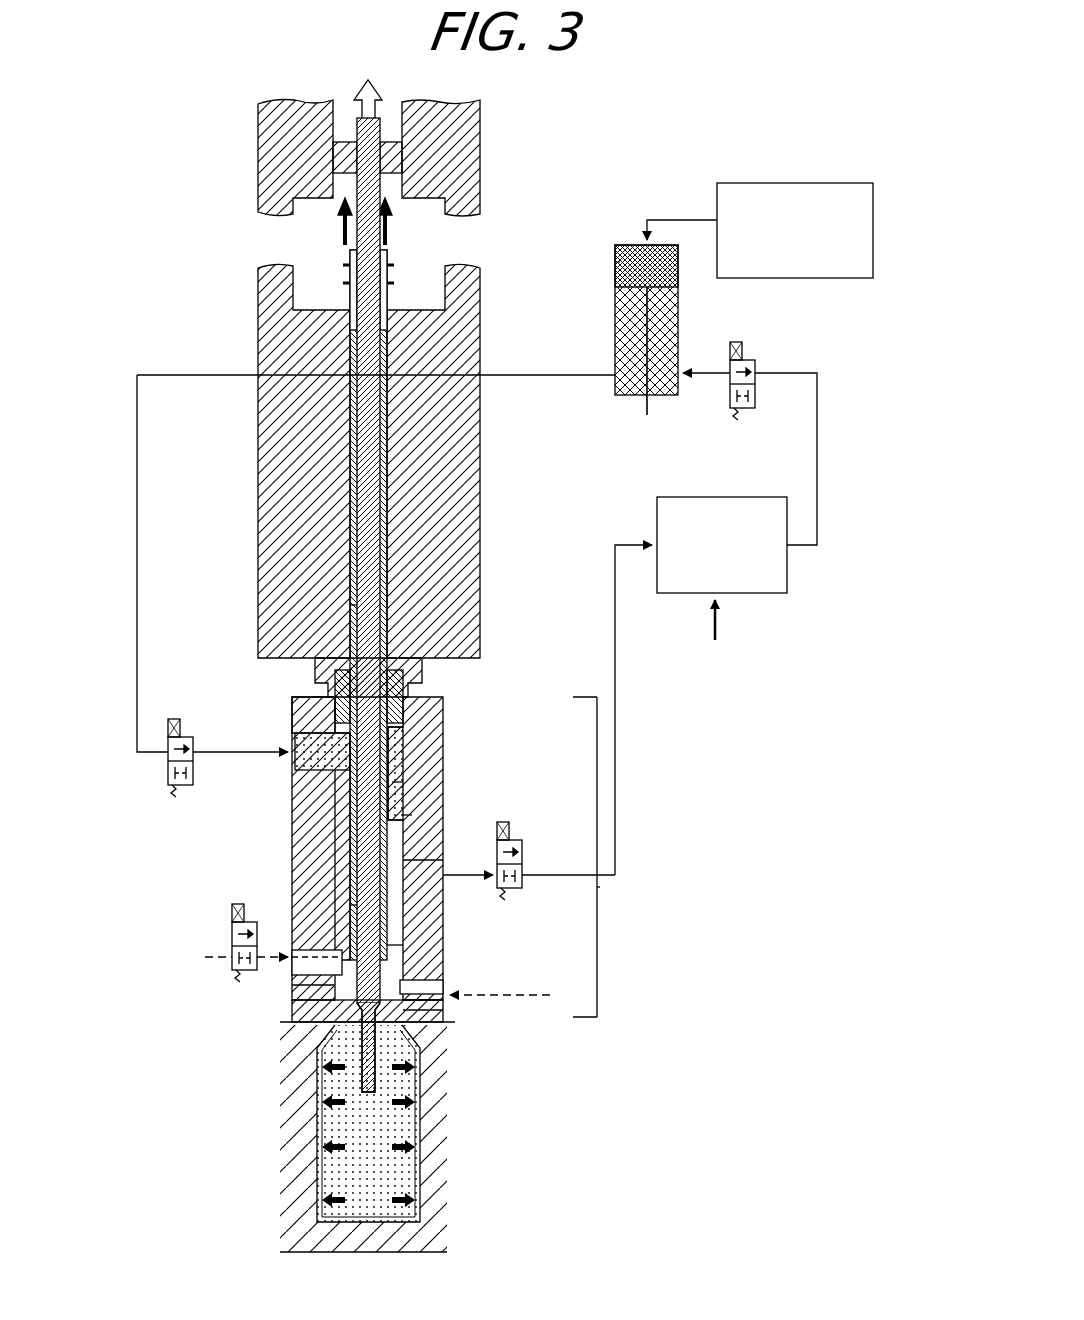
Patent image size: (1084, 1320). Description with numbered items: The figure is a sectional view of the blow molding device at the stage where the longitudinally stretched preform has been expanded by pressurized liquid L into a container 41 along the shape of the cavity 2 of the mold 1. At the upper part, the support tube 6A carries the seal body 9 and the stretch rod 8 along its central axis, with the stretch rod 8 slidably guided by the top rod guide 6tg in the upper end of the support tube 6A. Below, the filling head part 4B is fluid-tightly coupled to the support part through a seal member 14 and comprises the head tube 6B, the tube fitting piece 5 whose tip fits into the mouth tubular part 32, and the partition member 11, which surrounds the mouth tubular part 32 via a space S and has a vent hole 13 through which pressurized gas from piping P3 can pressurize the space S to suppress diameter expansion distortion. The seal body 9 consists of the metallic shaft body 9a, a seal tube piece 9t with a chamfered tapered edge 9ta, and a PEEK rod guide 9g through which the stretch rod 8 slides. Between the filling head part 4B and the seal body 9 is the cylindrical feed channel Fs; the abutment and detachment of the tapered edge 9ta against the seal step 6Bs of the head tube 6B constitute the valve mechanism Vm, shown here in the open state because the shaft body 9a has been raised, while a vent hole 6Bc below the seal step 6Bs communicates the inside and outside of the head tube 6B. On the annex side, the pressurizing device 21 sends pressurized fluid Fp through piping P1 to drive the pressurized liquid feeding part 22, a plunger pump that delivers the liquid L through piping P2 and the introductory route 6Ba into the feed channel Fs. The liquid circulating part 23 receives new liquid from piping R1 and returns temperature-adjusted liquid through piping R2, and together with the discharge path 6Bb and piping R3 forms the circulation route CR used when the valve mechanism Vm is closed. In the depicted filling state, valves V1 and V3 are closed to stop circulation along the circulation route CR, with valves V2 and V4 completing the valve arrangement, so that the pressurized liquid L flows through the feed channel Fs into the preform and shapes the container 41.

The top rod guide 6tg is at (395, 152).
The pressurizing device 21 is at (792, 172).
The piping P1 is at (650, 214).
The pressurized liquid feeding part 22 is at (614, 240).
The pressurized fluid Fp is at (612, 262).
The liquid L is at (395, 735).
The support tube 6A is at (282, 392).
The valve V1 is at (752, 400).
The piping R2 is at (820, 452).
The piping P2 is at (515, 378).
The liquid circulating part 23 is at (742, 600).
The piping R1 is at (716, 637).
The seal member 14 is at (412, 672).
The shaft body 9a is at (355, 606).
The seal body 9 is at (195, 622).
The stretch rod 8 is at (365, 658).
The introductory route 6Ba is at (300, 725).
The seal tube piece 9t is at (345, 782).
The circulation route CR is at (635, 695).
The feed channel Fs is at (392, 784).
The piping R3 is at (615, 770).
The valve mechanism Vm is at (352, 862).
The rod guide 9g is at (410, 816).
The discharge path 6Bb is at (390, 862).
The head tube 6B is at (300, 872).
The valve V2 is at (172, 788).
The tube fitting piece 5 is at (300, 905).
The filling head part 4B is at (600, 888).
The valve V3 is at (522, 892).
The tapered edge 9ta is at (420, 906).
The seal step 6Bs is at (430, 950).
The vent hole 13 is at (470, 986).
The piping P3 is at (516, 1002).
The valve V4 is at (252, 968).
The space S is at (440, 1027).
The partition member 11 is at (300, 986).
The mouth tubular part 32 is at (430, 1040).
The vent hole 6Bc is at (292, 965).
The container 41 is at (425, 1125).
The mold 1 is at (415, 1172).
The cavity 2 is at (400, 1196).